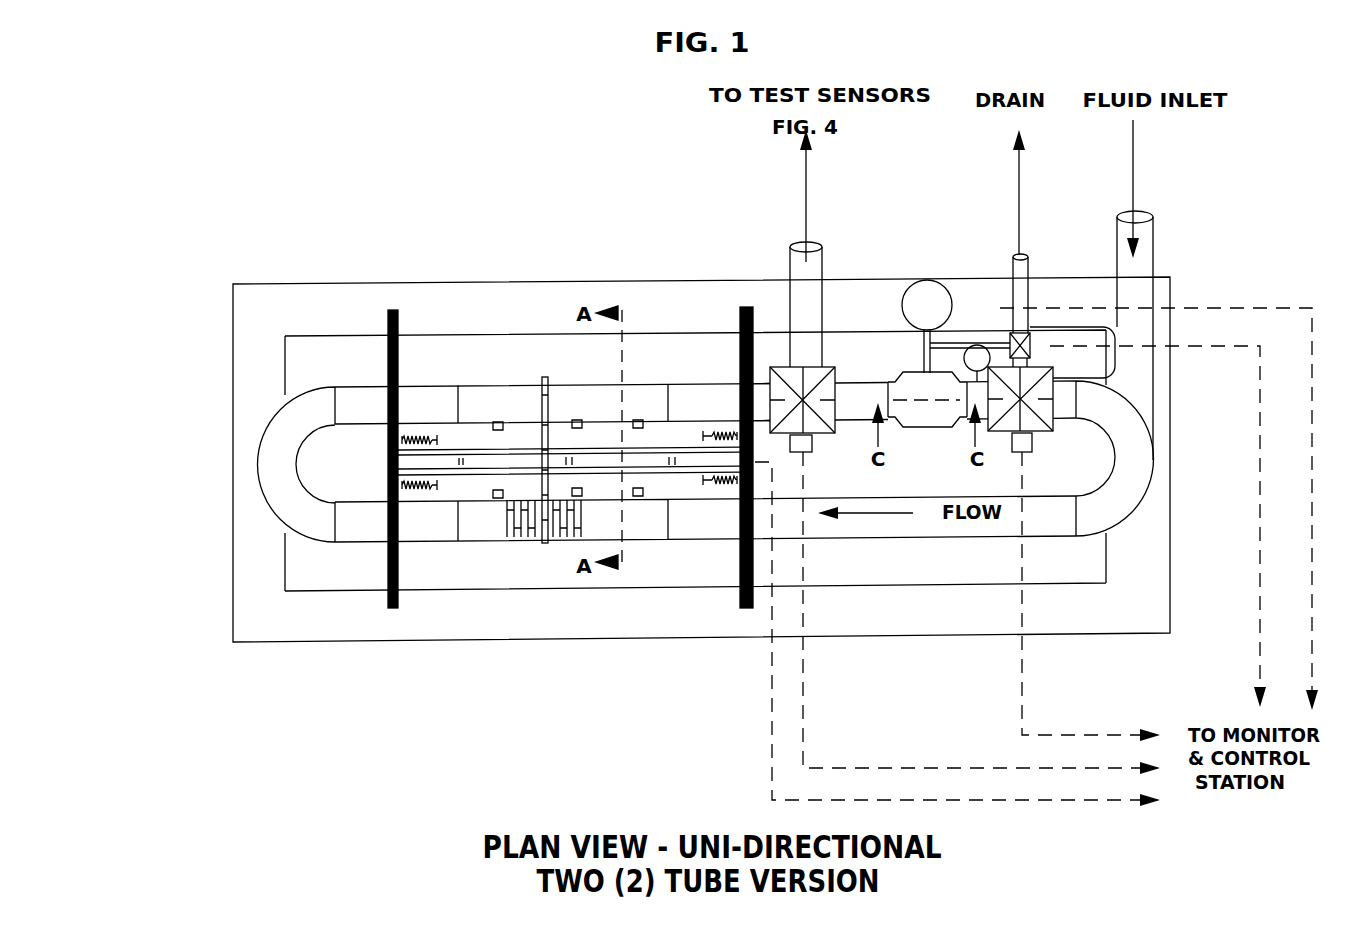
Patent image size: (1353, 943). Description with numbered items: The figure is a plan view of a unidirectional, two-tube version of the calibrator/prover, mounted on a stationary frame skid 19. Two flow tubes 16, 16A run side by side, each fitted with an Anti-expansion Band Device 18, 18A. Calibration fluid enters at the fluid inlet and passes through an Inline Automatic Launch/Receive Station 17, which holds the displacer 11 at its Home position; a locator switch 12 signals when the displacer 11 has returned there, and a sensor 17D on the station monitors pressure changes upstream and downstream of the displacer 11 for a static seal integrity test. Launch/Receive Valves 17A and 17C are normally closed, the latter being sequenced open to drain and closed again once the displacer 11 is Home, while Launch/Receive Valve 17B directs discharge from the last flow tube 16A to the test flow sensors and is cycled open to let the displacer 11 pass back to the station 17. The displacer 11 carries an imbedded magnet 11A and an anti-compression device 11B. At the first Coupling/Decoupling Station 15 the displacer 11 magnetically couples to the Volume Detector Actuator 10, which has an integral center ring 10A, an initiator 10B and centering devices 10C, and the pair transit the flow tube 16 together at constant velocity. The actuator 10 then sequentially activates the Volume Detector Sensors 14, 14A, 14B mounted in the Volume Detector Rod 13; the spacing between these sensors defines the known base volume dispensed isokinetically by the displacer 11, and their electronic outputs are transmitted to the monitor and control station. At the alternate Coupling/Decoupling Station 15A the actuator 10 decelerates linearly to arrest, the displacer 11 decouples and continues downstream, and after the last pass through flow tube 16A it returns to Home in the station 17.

The Volume Detector Actuator 10 is at (545, 548).
The integral center ring 10A is at (496, 562).
The initiator 10B is at (524, 584).
The centering devices 10C is at (566, 547).
The displacer 11 is at (517, 508).
The imbedded magnet 11A is at (394, 600).
The anti-compression device 11B is at (429, 600).
The locator switch 12 is at (975, 345).
The Volume Detector Rod 13 is at (689, 475).
The Volume Detector Sensor 14 is at (673, 457).
The Volume Detector Sensor 14A is at (570, 457).
The Volume Detector Sensor 14B is at (463, 455).
The Coupling/Decoupling Station 15 is at (725, 428).
The alternate Coupling/Decoupling Station 15A is at (423, 432).
The flow tube 16 is at (340, 505).
The flow tube 16A is at (360, 403).
The Inline Automatic Launch/Receive Station 17 is at (932, 427).
The Launch/Receive Valve 17A is at (1021, 447).
The Launch/Receive Valve 17B is at (803, 455).
The Launch/Receive Valve 17C is at (1032, 333).
The sensor 17D is at (921, 279).
The Anti-expansion Band Device 18 is at (661, 537).
The Anti-expansion Band Device 18A is at (466, 388).
The stationary frame skid 19 is at (410, 297).